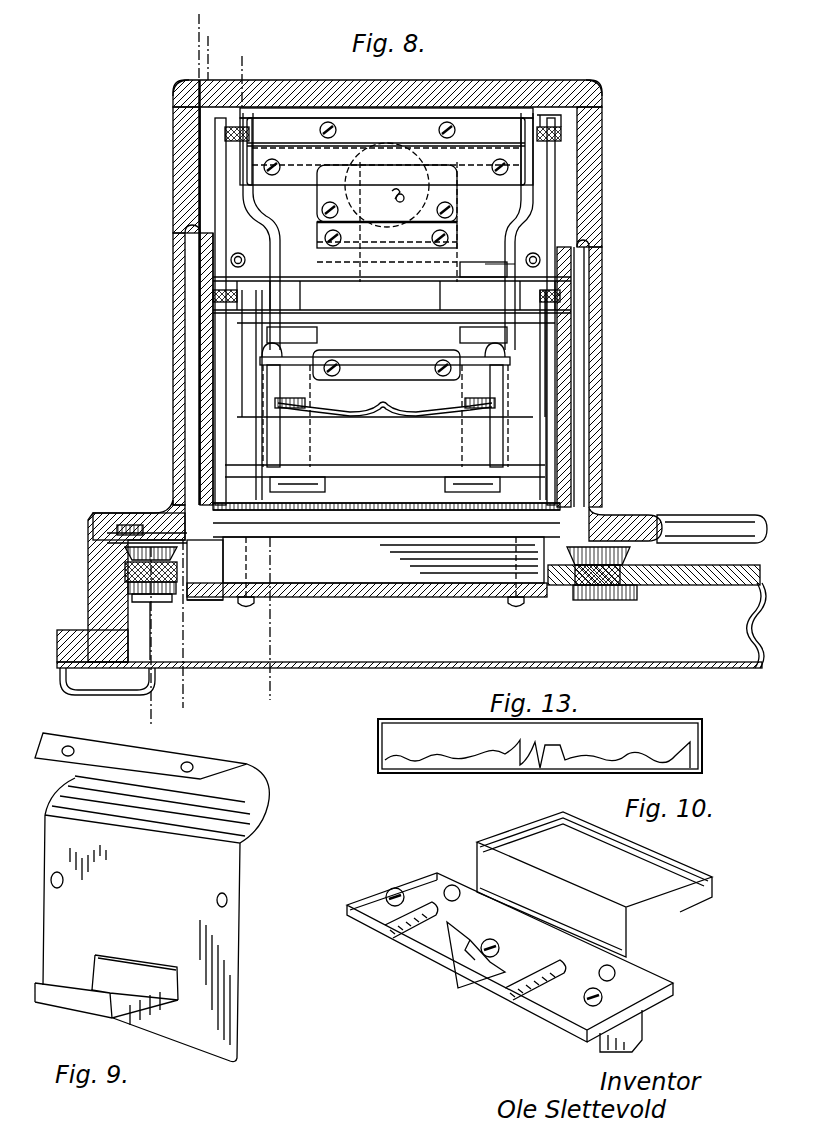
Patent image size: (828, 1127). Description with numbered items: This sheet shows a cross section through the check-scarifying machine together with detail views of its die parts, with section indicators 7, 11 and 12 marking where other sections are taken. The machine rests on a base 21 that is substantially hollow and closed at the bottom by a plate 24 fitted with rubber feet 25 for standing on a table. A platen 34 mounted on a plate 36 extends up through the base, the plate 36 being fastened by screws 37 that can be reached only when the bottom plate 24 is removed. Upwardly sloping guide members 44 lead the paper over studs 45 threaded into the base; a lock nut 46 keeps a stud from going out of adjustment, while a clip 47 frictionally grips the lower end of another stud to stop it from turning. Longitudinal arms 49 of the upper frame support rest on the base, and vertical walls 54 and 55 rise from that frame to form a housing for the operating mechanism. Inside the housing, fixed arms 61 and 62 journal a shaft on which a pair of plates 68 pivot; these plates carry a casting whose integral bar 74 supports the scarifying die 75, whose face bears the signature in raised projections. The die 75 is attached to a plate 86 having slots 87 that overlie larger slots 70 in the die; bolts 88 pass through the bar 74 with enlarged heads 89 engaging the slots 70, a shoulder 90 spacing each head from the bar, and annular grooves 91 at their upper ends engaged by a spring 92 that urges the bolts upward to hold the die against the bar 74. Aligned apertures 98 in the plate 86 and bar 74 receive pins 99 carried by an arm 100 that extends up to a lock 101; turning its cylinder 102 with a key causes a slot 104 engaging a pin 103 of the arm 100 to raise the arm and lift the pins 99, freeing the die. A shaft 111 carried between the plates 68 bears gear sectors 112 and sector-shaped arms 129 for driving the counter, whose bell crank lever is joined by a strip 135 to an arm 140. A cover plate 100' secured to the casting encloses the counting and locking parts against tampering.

In FIG. 8, the section line 7- 7 is at (225, 62).
In FIG. 8, the section line 11- 11 is at (188, 43).
In FIG. 8, the section line 12- 12 is at (217, 23).
In FIG. 8, the base 21 is at (172, 660).
In FIG. 8, the plate 24 is at (118, 622).
In FIG. 8, the rubber feet 25 is at (73, 678).
In FIG. 8, the platen 34 is at (476, 567).
In FIG. 8, the plate 36 is at (386, 596).
In FIG. 8, the screws 37 is at (208, 602).
In FIG. 8, the guide members 44 is at (112, 546).
In FIG. 8, the stud 45 is at (126, 560).
In FIG. 8, the lock nut 46 is at (600, 598).
In FIG. 8, the clip 47 is at (152, 600).
In FIG. 8, the longitudinal arms 49 is at (62, 642).
In FIG. 8, the vertical wall 54 is at (589, 218).
In FIG. 8, the vertical wall 55 is at (180, 218).
In FIG. 8, the arm 61 is at (564, 385).
In FIG. 8, the arm 62 is at (207, 402).
In FIG. 8, the plates 68 is at (175, 124).
In FIG. 10, the slots 70 is at (400, 936).
In FIG. 8, the bar 74 is at (245, 440).
In FIG. 8, the scarifying die 75 is at (190, 492).
In FIG. 13, the scarifying die 75 is at (378, 755).
In FIG. 10, the scarifying die 75 is at (447, 963).
In FIG. 10, the plate 86 is at (645, 978).
In FIG. 10, the slots 87 is at (458, 985).
In FIG. 8, the bolts 88 is at (318, 433).
In FIG. 8, the enlarged heads 89 is at (325, 485).
In FIG. 8, the shoulder 90 is at (457, 465).
In FIG. 8, the annular grooves 91 is at (292, 405).
In FIG. 8, the spring 92 is at (402, 407).
In FIG. 10, the apertures 98 is at (452, 885).
In FIG. 8, the pins 99 is at (262, 380).
In FIG. 8, the arm 100 is at (329, 244).
In FIG. 9, the cover plate 100' is at (166, 897).
In FIG. 8, the lock 101 is at (345, 192).
In FIG. 8, the cylinder 102 is at (408, 146).
In FIG. 8, the pin 103 is at (448, 192).
In FIG. 8, the slot 104 is at (393, 197).
In FIG. 8, the shaft 111 is at (487, 282).
In FIG. 8, the gear sectors 112 is at (197, 287).
In FIG. 8, the sector-shaped arms 129 is at (222, 192).
In FIG. 8, the strip 135 is at (479, 157).
In FIG. 8, the arm 140 is at (557, 123).